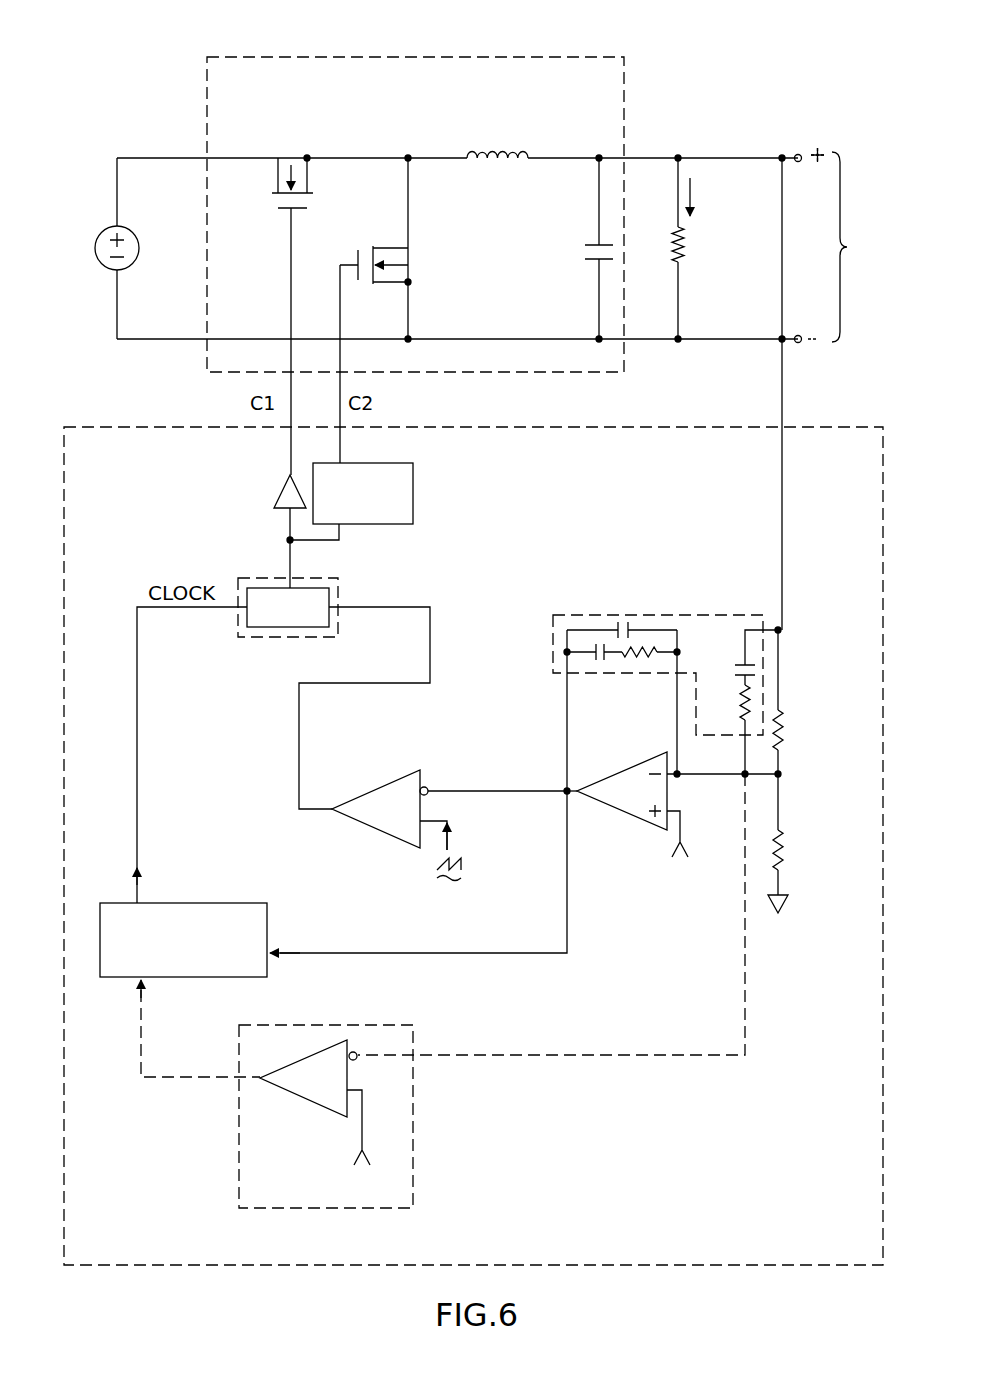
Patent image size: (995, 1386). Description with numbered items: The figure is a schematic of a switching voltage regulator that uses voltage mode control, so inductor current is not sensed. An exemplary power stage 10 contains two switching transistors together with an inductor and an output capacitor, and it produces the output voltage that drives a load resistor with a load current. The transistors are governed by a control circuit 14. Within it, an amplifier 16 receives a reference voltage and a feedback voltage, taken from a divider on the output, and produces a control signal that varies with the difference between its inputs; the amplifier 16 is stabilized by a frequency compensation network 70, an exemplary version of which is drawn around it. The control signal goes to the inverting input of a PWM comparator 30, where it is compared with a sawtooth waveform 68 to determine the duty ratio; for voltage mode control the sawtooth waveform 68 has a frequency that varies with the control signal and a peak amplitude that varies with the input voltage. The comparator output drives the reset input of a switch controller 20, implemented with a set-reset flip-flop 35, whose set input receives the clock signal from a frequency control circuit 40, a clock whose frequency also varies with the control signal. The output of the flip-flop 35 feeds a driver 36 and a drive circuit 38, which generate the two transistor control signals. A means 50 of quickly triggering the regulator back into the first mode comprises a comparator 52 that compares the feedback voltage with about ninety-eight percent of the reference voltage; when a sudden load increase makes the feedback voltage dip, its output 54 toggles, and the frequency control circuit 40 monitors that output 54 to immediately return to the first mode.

The power stage 10 is at (268, 57).
The control circuit 14 is at (108, 427).
The amplifier 16 is at (626, 807).
The switch controller 20 is at (262, 578).
The PWM comparator 30 is at (381, 783).
The set-reset flip-flop 35 is at (308, 587).
The driver 36 is at (277, 491).
The drive circuit 38 is at (413, 490).
The frequency control circuit 40 is at (203, 903).
The means of quickly triggering the regulator back into Mode I 50 is at (382, 1025).
The comparator 52 is at (330, 1097).
The output of comparator 54 is at (140, 1065).
The sawtooth waveform 68 is at (440, 882).
The frequency compensation network 70 is at (553, 660).